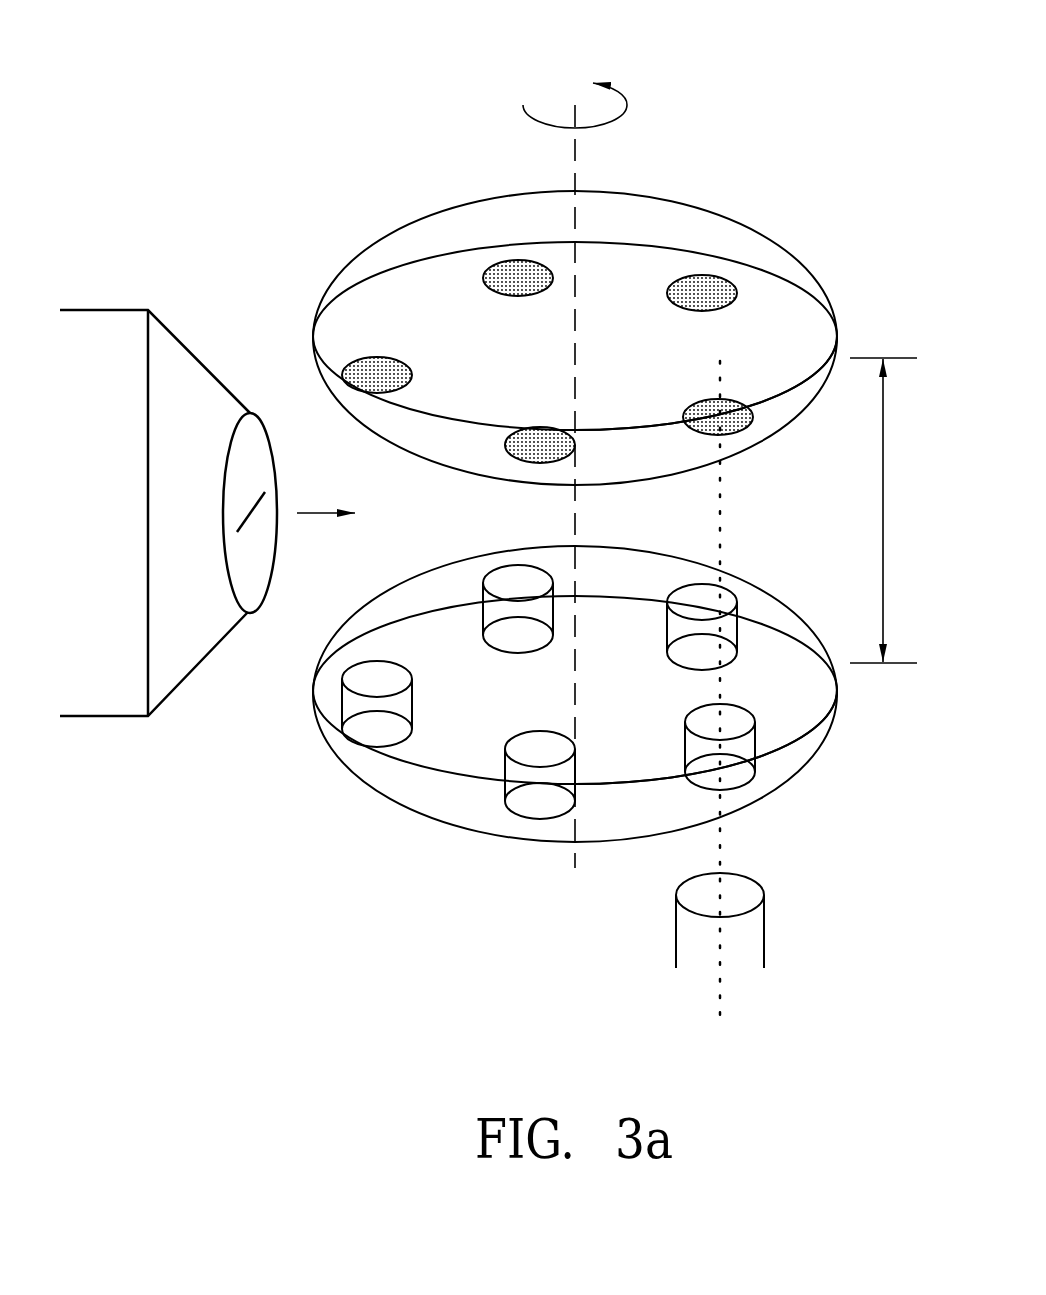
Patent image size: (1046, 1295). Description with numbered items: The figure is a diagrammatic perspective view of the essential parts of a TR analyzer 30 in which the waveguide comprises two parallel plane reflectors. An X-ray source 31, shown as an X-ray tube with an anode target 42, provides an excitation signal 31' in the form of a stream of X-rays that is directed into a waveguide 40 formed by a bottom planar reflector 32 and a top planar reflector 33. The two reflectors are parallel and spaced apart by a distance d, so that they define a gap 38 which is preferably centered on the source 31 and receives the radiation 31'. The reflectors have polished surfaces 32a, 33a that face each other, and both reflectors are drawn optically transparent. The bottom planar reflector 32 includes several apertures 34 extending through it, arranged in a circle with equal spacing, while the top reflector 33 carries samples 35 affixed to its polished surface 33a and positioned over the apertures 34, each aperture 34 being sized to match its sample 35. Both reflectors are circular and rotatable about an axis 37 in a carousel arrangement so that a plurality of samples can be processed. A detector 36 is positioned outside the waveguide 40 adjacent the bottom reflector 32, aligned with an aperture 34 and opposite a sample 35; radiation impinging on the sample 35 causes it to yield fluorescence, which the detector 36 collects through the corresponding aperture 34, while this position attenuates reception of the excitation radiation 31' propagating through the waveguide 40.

The TR analyzer 30 is at (697, 115).
The X-ray source 31 is at (155, 435).
The excitation signal 31' is at (326, 533).
The bottom planar reflector 32 is at (390, 800).
The polished surface 32a is at (782, 700).
The top planar reflector 33 is at (402, 218).
The polished surface 33a is at (762, 438).
The aperture 34 is at (760, 723).
The sample 35 is at (698, 402).
The detector 36 is at (763, 933).
The axis 37 is at (573, 110).
The gap 38 is at (332, 443).
The waveguide 40 is at (843, 285).
The anode target 42 is at (259, 462).
The distance d is at (885, 495).